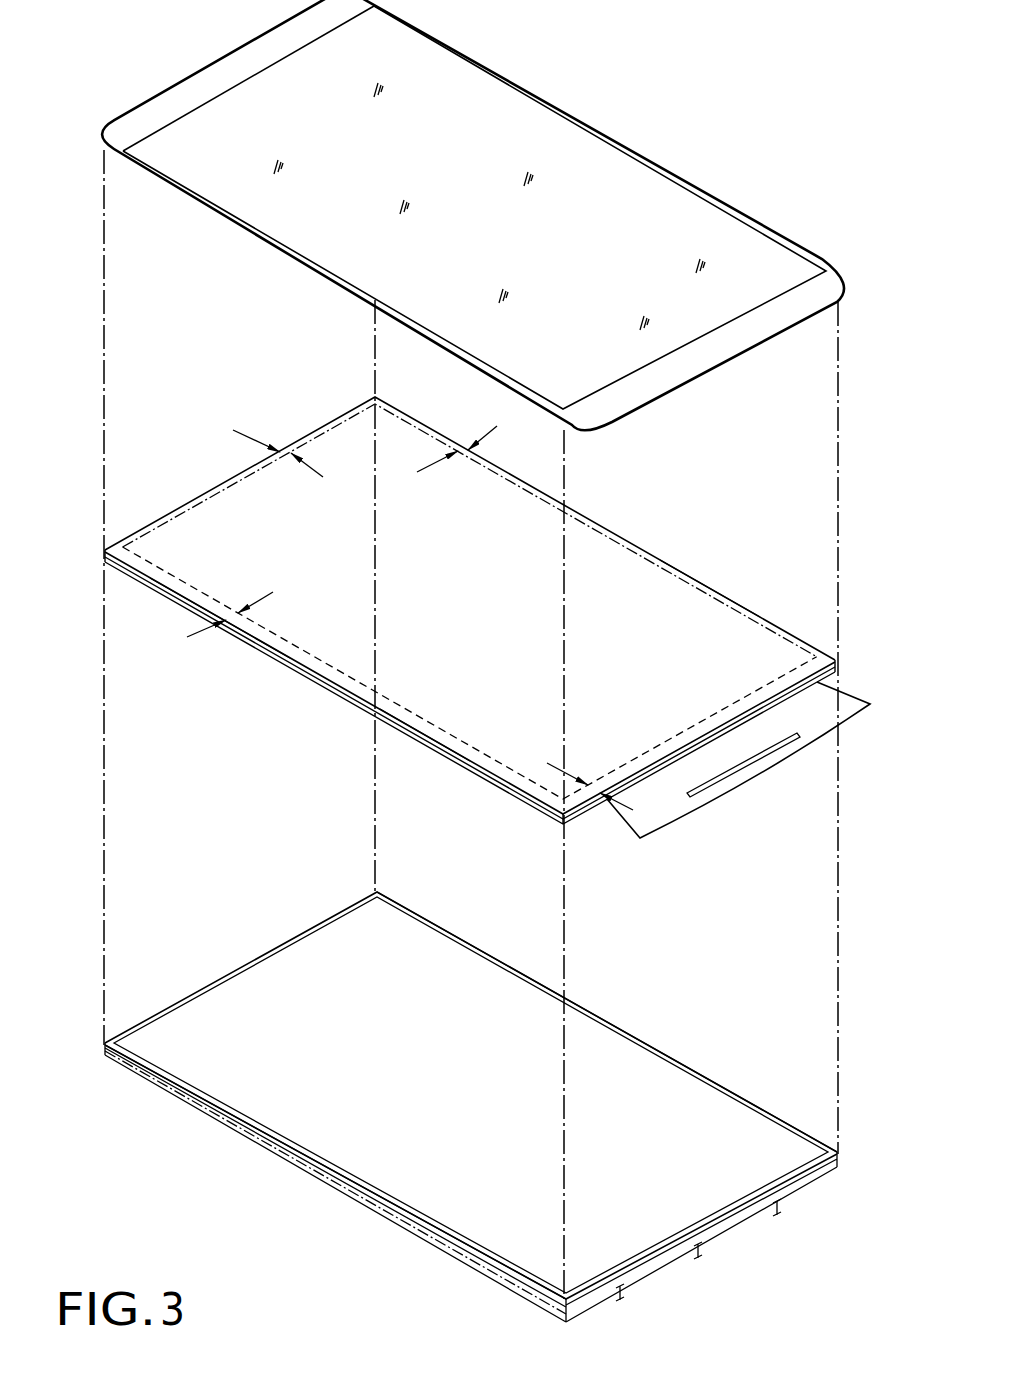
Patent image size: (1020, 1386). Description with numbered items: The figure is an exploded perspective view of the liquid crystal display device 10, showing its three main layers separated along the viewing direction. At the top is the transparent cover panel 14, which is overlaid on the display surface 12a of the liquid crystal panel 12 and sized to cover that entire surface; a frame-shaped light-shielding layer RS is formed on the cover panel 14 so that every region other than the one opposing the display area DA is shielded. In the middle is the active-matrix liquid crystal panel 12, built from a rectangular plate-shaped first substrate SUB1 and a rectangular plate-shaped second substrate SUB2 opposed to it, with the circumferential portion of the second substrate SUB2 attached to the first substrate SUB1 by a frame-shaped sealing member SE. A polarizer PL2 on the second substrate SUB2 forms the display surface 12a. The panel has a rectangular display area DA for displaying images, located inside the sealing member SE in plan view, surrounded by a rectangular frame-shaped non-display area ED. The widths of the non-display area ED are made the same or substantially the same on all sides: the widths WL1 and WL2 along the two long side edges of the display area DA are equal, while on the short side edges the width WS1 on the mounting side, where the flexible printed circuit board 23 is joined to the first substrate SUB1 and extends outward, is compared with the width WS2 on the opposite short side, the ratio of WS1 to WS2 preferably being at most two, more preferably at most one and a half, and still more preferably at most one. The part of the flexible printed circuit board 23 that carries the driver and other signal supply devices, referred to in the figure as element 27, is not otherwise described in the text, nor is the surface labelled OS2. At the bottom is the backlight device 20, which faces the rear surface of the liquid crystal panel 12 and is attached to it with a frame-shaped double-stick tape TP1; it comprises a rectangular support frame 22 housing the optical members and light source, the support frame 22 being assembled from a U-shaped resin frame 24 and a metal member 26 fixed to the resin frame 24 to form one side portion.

The liquid crystal display device 10 is at (86, 423).
The liquid crystal panel 12 is at (470, 638).
The display surface 12a is at (223, 562).
The cover panel 14 is at (473, 215).
The backlight device 20 is at (471, 1108).
The support frame 22 is at (470, 1261).
The flexible printed circuit board 23 is at (745, 736).
The resin frame 24 is at (400, 1219).
The metal member 26 is at (658, 1264).
The connector 27 is at (717, 778).
The light-shielding layer RS is at (185, 98).
The sealing member SE is at (715, 592).
The display area DA is at (302, 648).
The non-display area ED is at (423, 735).
The polarizer PL2 is at (200, 520).
The first substrate SUB1 is at (557, 822).
The second substrate SUB2 is at (503, 757).
The width of non-display area at long side edge WL1 is at (222, 632).
The width of non-display area at long side edge WL2 is at (460, 435).
The width of non-display area on mounting side WS1 is at (610, 786).
The width of non-display area opposite mounting side WS2 is at (267, 437).
The outer surface OS2 is at (262, 983).
The double-stick tape TP1 is at (641, 1048).